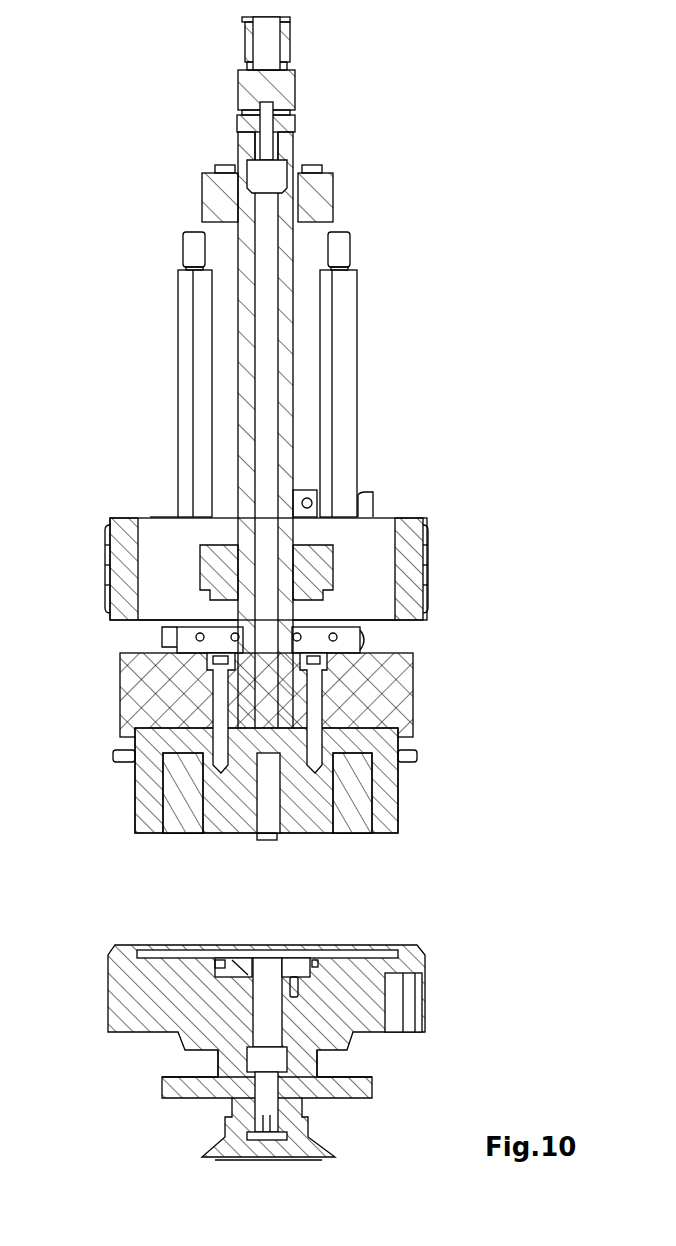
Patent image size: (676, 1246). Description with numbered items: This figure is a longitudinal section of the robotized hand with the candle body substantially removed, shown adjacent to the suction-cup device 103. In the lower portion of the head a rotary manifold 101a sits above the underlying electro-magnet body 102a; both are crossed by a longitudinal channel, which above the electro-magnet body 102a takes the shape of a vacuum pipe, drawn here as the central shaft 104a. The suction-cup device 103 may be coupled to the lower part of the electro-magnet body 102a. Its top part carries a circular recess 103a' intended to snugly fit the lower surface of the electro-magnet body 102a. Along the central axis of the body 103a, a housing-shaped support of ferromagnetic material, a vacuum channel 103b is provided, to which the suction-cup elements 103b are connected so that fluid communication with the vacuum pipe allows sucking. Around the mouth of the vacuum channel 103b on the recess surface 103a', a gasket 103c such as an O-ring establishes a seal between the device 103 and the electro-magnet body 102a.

The shaft 104a is at (268, 378).
The rotary manifold 101a is at (400, 578).
The electro-magnet body 102a is at (388, 803).
The suction-cup device 103 is at (90, 1097).
The body of the suction-cup device 103a is at (231, 1052).
The circular recess 103a' is at (267, 921).
The vacuum channel 103b is at (268, 1032).
The gasket 103c is at (313, 963).